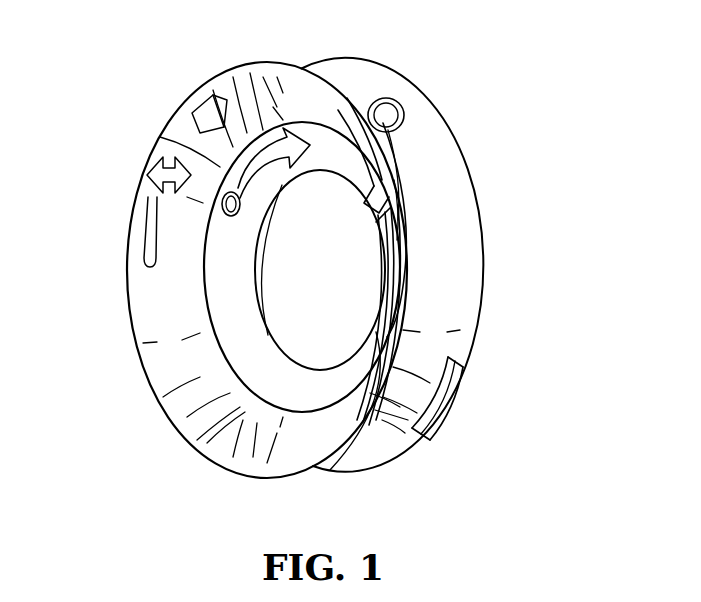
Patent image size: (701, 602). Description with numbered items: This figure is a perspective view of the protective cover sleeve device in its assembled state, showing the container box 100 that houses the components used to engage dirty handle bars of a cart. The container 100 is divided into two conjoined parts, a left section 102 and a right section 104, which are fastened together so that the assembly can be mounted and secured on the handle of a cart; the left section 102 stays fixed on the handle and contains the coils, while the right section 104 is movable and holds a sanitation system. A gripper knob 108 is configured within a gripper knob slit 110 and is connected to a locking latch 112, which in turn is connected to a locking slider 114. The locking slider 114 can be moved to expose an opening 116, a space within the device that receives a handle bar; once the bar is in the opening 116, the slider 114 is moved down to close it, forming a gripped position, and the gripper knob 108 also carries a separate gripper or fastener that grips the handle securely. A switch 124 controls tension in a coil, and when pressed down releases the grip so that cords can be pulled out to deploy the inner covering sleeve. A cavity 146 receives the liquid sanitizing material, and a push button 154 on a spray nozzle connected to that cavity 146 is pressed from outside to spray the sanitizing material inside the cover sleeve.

The container box 100 is at (82, 397).
The left section 102 is at (187, 440).
The right section 104 is at (482, 315).
The gripper knob 108 is at (167, 157).
The gripper knob slit 110 is at (145, 242).
The locking latch 112 is at (280, 147).
The locking slider 114 is at (415, 218).
The opening 116 is at (320, 318).
The switch 124 is at (197, 104).
The cavity 146 is at (398, 101).
The push button 154 is at (447, 407).